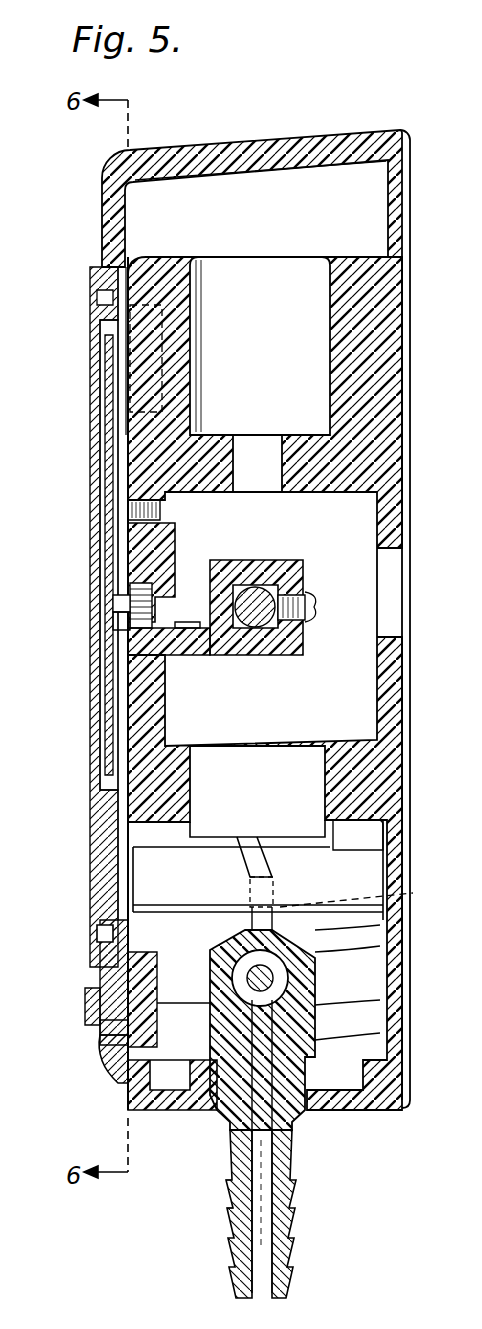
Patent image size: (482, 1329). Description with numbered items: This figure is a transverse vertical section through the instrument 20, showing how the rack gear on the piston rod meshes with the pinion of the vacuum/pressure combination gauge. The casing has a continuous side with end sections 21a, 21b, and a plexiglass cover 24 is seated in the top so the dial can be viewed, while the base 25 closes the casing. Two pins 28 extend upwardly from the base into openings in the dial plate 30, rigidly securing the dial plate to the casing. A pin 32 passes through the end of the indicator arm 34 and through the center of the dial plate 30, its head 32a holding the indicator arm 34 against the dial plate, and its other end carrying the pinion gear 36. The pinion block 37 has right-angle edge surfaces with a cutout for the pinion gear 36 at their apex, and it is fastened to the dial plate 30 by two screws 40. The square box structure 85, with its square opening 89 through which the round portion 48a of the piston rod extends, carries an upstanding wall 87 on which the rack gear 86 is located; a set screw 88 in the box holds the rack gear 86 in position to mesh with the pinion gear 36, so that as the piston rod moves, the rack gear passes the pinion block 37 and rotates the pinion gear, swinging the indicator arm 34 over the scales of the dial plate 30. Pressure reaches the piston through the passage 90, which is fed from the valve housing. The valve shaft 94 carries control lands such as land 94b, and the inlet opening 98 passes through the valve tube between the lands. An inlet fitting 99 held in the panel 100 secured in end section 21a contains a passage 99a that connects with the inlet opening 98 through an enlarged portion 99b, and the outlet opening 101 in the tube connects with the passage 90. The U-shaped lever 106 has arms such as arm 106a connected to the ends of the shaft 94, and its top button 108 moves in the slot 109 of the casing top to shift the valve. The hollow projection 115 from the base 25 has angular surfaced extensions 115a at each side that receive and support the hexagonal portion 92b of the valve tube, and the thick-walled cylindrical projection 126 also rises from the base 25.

The instrument 20 is at (350, 124).
The end section 21a is at (118, 1083).
The end section 21b is at (292, 135).
The plexiglass cover 24 is at (90, 663).
The base 25 is at (413, 338).
The pins 28 is at (125, 440).
The dial plate 30 is at (125, 360).
The pin 32 is at (108, 598).
The head 32a is at (108, 619).
The indicator arm 34 is at (108, 410).
The pinion gear 36 is at (145, 578).
The pinion block 37 is at (167, 545).
The screws 40 is at (115, 503).
The round portion 48a is at (263, 620).
The square box structure 85 is at (277, 562).
The rack gear 86 is at (178, 618).
The upstanding wall 87 is at (207, 648).
The set screw 88 is at (355, 568).
The square opening 89 is at (245, 622).
The passage 90 is at (253, 843).
The hexagonal portion 92b is at (317, 970).
The shaft 94 is at (257, 1000).
The control land 94b is at (182, 950).
The inlet opening 98 is at (277, 1012).
The inlet fitting 99 is at (288, 1255).
The passage 99a is at (265, 1193).
The enlarged portion 99b is at (100, 932).
The panel 100 is at (347, 1112).
The outlet opening 101 is at (417, 892).
The U-shaped lever 106 is at (107, 1057).
The arm 106a is at (200, 975).
The top button 108 is at (100, 995).
The slot 109 is at (113, 1022).
The hollow projection 115 is at (363, 988).
The angular surfaced extension 115a is at (353, 932).
The second cylindrical projection 126 is at (390, 415).